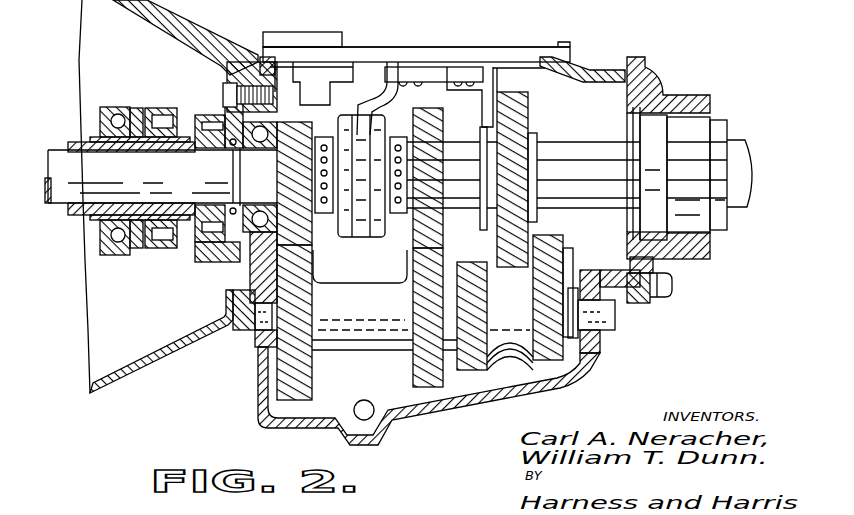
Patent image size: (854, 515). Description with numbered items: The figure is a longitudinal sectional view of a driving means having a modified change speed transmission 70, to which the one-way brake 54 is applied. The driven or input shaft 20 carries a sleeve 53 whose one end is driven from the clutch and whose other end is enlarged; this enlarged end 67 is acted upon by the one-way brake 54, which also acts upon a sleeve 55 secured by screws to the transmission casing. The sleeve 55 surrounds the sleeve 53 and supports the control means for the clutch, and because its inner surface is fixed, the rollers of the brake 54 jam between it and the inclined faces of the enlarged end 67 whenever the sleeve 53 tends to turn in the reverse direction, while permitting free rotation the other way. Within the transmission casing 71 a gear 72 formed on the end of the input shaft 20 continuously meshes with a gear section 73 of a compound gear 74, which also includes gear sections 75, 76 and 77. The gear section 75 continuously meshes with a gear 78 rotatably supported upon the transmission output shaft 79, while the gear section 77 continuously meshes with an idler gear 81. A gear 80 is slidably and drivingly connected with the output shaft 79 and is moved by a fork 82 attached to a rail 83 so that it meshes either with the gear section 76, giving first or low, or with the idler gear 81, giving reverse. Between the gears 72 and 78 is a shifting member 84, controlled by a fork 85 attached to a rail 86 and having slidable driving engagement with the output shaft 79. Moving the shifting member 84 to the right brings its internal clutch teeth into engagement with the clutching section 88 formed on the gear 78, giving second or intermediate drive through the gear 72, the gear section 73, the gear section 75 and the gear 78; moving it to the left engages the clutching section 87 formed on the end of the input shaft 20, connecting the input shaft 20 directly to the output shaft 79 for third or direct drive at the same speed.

The driven shaft 20 is at (67, 196).
The sleeve 53 is at (163, 203).
The one-way brake 54 is at (208, 250).
The sleeve 55 is at (213, 100).
The enlarged end of the sleeve 67 is at (217, 212).
The change speed transmission 70 is at (527, 40).
The transmission casing 71 is at (601, 72).
The gear 72 is at (300, 126).
The gear section 73 is at (312, 390).
The compound gear 74 is at (366, 350).
The gear section 75 is at (443, 388).
The gear section 76 is at (488, 380).
The gear section 77 is at (535, 366).
The gear 78 is at (402, 250).
The transmission output shaft 79 is at (579, 147).
The gear 80 is at (521, 103).
The idler gear 81 is at (558, 242).
The fork 82 is at (498, 80).
The rail 83 is at (548, 46).
The shifting member 84 is at (352, 193).
The fork 85 is at (399, 99).
The rail 86 is at (372, 60).
The clutching section 87 is at (327, 216).
The clutching section 88 is at (398, 216).